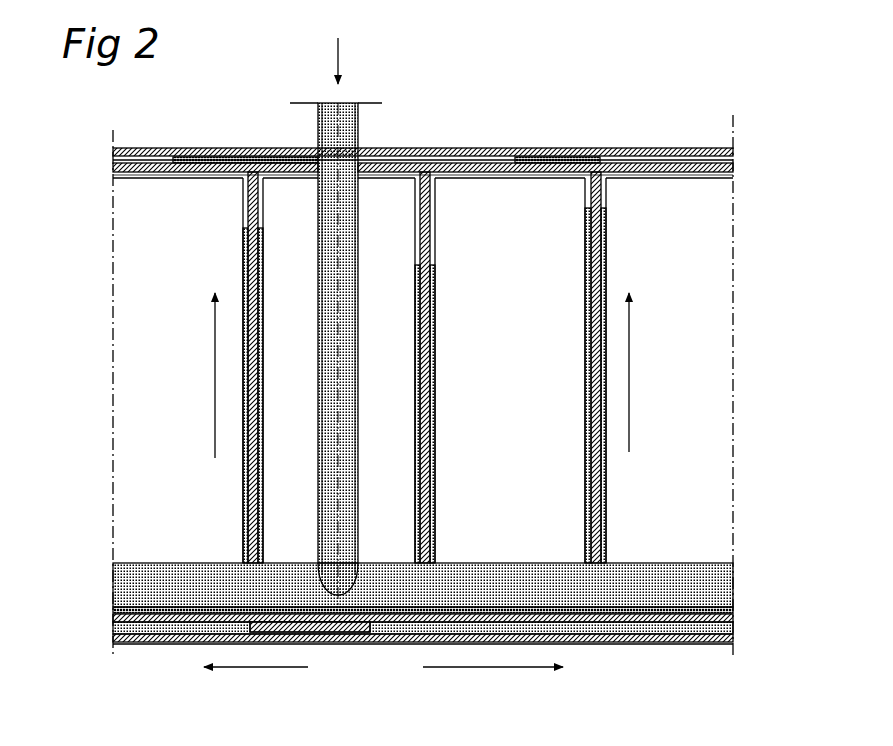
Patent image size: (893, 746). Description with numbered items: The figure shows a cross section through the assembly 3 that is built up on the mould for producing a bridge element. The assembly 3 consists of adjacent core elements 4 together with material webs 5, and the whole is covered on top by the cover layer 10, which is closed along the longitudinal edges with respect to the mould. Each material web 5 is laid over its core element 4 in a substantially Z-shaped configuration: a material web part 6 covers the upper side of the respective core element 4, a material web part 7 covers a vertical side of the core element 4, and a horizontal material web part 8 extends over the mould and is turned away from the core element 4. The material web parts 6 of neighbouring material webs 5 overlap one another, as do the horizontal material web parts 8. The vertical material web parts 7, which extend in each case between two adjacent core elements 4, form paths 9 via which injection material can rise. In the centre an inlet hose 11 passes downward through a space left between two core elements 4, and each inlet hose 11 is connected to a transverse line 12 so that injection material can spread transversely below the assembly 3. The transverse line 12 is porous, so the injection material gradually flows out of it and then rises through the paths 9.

The assembly 3 is at (650, 141).
The core element 4 is at (521, 207).
The material web 5 is at (487, 162).
The material web part 6 is at (237, 164).
The material web part 7 is at (248, 228).
The horizontal material web part 8 is at (365, 622).
The path 9 is at (431, 234).
The cover layer 10 is at (140, 148).
The inlet hose 11 is at (350, 120).
The transverse line 12 is at (705, 583).